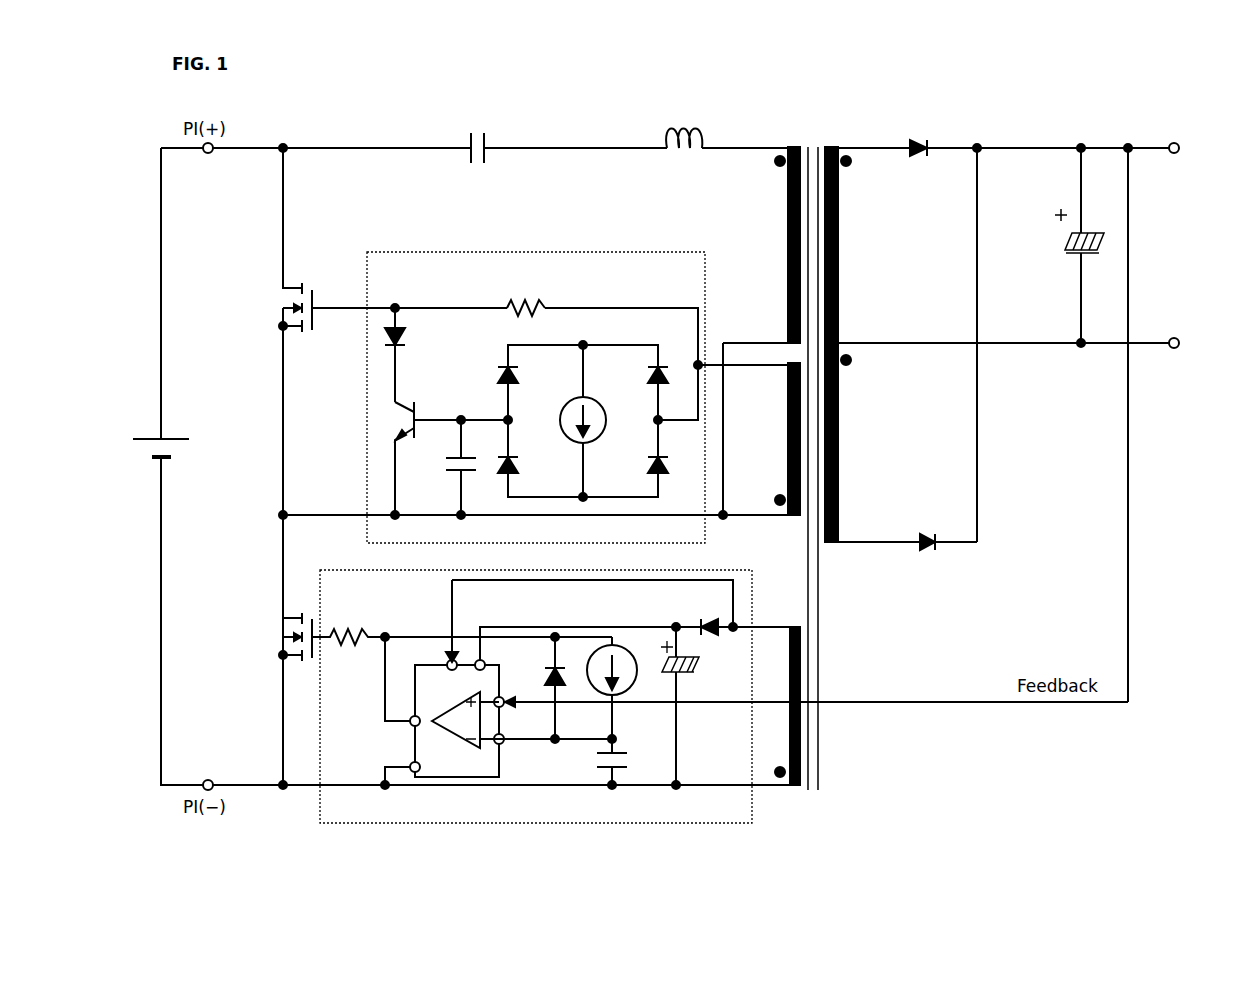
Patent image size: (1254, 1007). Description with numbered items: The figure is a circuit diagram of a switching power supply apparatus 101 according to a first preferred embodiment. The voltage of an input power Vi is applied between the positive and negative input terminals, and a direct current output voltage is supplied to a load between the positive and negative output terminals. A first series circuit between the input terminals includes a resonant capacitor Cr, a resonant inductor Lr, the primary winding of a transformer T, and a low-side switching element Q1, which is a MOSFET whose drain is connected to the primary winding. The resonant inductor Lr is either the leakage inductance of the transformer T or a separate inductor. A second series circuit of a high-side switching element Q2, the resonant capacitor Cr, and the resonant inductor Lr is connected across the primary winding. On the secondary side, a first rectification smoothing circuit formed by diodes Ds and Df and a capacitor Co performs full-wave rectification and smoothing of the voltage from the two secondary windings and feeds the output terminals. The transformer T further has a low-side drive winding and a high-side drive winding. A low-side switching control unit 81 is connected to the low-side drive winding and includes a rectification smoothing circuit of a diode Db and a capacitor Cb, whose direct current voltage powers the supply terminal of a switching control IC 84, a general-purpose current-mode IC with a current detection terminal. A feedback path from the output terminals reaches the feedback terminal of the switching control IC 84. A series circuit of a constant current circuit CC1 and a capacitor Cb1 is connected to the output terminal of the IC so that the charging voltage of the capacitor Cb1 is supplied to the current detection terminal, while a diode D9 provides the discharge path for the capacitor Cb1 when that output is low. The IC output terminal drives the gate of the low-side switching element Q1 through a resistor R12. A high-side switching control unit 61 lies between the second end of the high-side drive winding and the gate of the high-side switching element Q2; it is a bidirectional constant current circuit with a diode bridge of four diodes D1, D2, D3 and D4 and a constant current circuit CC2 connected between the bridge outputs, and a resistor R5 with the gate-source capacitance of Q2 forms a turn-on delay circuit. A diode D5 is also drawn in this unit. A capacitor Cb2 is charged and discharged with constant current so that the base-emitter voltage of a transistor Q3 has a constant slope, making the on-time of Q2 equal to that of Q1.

The high-side switching control unit 61 is at (549, 251).
The low-side switching control unit 81 is at (549, 570).
The switching control IC 84 is at (483, 778).
The switching power supply apparatus 101 is at (1024, 400).
The low-side switching element Q1 is at (278, 636).
The high-side switching element Q2 is at (278, 306).
The transistor Q3 is at (440, 458).
The diode D1 is at (643, 375).
The diode D2 is at (643, 465).
The diode D3 is at (522, 375).
The diode D4 is at (522, 465).
The diode D5 is at (408, 355).
The diode D9 is at (565, 688).
The diode Ds is at (917, 135).
The diode Df is at (934, 530).
The diode Db is at (709, 613).
The resonant capacitor Cr is at (461, 153).
The resonant inductor Lr is at (671, 153).
The capacitor Cb is at (692, 706).
The capacitor Cb1 is at (631, 762).
The capacitor Cb2 is at (446, 467).
The capacitor Co is at (1070, 232).
The resistor R5 is at (526, 298).
The resistor R12 is at (348, 625).
The constant current circuit CC1 is at (622, 648).
The constant current circuit CC2 is at (604, 410).
The transformer T is at (824, 134).
The input power Vi is at (156, 432).